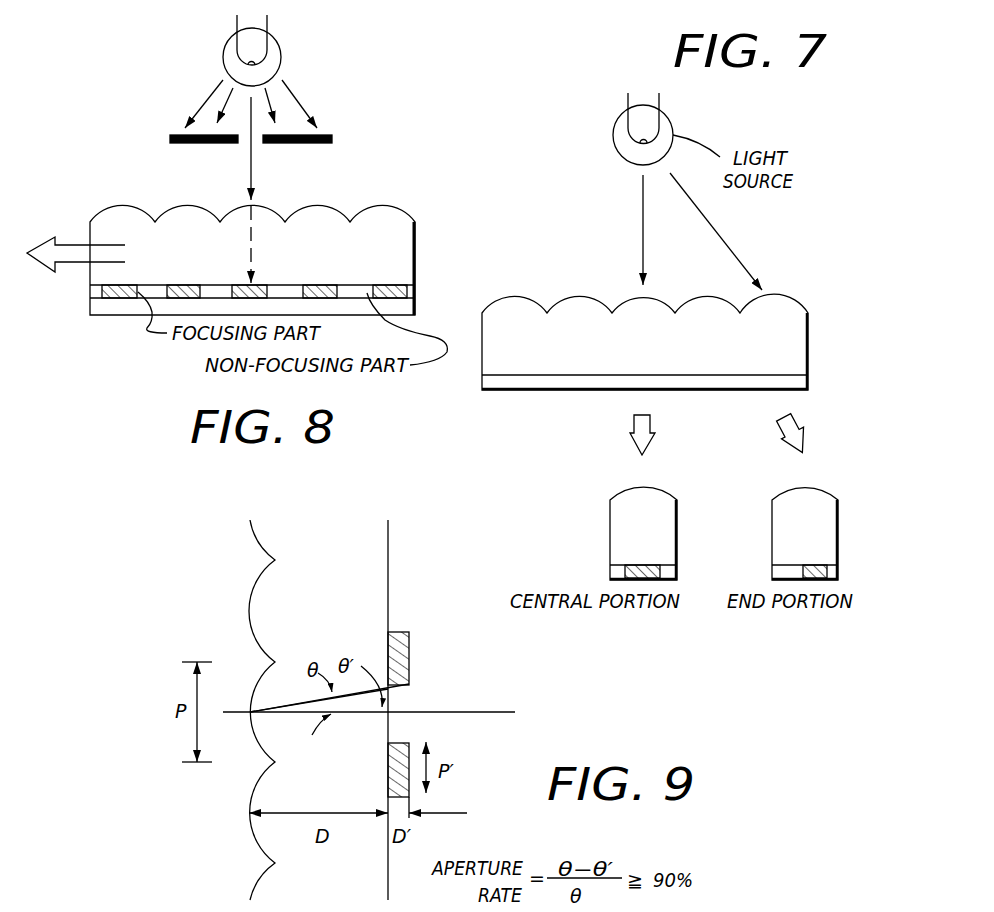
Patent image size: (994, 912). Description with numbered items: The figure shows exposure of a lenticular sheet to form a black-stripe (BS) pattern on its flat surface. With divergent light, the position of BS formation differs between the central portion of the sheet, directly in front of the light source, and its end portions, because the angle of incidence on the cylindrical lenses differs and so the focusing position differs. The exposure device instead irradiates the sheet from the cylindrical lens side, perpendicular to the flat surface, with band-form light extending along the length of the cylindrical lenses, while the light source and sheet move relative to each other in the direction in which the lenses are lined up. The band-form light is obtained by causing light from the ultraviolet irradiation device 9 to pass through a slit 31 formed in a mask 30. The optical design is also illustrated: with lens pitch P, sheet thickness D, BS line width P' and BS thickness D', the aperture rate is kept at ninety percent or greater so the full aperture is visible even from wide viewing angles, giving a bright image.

The ultraviolet irradiation device 9 is at (283, 57).
The mask 30 is at (327, 143).
The slit 31 is at (247, 142).